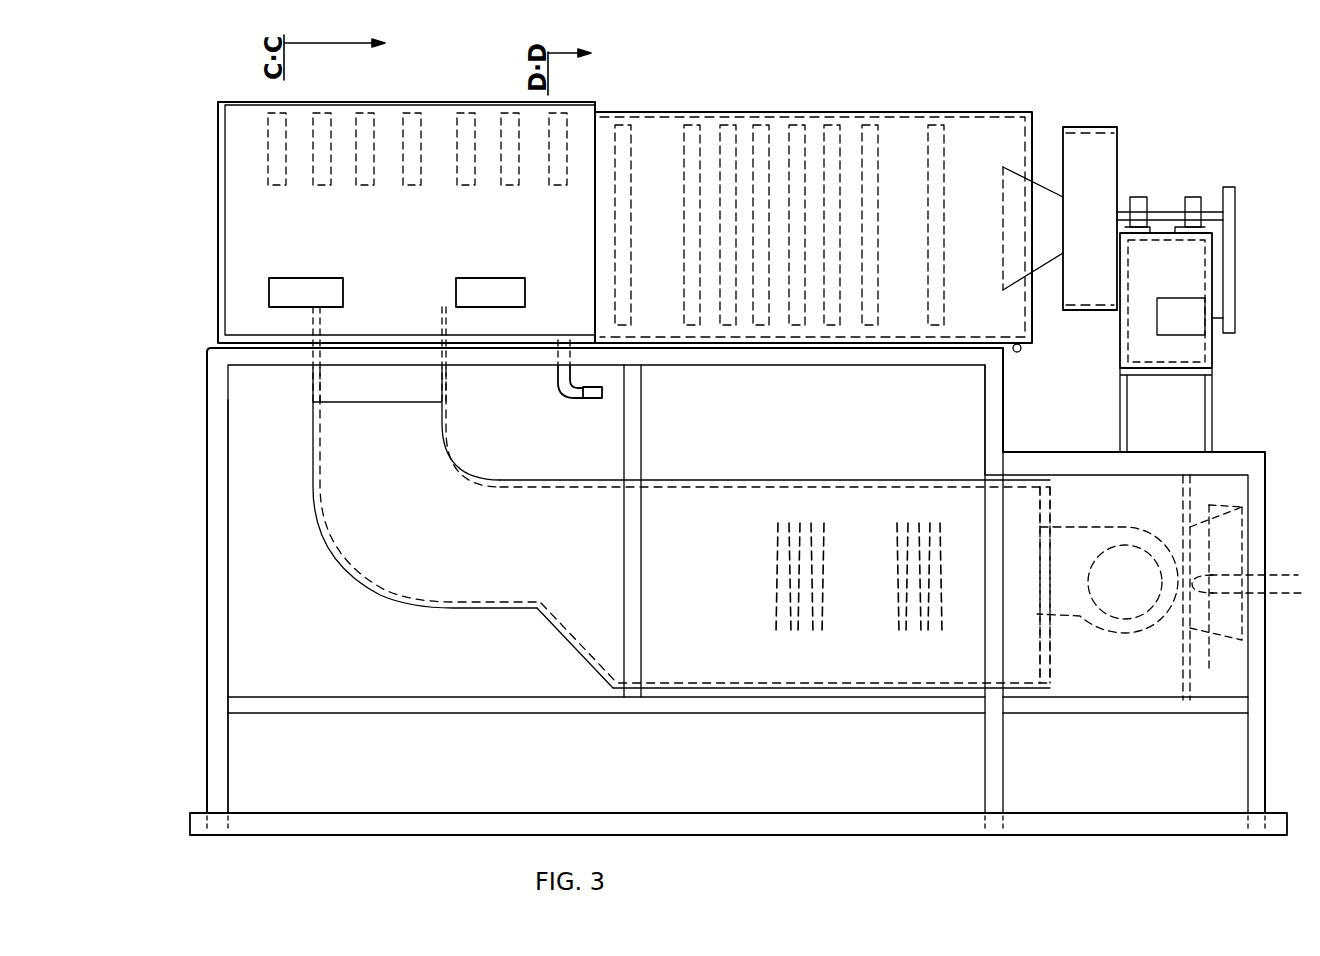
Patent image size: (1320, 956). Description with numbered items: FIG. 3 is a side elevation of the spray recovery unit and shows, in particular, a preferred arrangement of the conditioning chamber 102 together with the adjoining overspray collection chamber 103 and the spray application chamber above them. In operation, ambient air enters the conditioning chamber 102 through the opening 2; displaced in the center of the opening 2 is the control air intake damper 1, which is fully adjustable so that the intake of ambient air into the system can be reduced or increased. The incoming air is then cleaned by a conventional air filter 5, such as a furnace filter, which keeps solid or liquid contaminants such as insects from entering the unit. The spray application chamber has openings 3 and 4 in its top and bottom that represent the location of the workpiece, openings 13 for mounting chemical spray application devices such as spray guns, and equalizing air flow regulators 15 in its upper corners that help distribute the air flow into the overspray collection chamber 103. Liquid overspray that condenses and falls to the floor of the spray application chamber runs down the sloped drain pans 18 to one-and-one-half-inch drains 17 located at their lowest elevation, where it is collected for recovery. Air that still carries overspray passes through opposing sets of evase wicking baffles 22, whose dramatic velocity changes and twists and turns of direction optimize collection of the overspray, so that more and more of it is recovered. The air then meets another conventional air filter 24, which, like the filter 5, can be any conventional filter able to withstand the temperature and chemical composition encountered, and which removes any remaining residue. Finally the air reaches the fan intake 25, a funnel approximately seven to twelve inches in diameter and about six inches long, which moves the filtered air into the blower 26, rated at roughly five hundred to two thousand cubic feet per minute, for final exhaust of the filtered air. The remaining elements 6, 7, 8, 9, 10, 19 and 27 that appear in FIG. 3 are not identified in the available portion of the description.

The control air intake damper 1 is at (1236, 642).
The opening 2 is at (1199, 518).
The opening 3 is at (243, 97).
The opening 4 is at (280, 372).
The filter 5 is at (1200, 690).
The blower fan 6 is at (1112, 640).
The base plate 7 is at (1280, 812).
The lower chamber 8 is at (738, 725).
The brushes 9 is at (895, 636).
The return duct 10 is at (388, 603).
The openings 13 is at (445, 274).
The equalizing air flow regulators 15 is at (417, 122).
The drains 17 is at (1022, 350).
The sloped drain pans 18 is at (540, 385).
The drying chamber 19 is at (620, 108).
The wicking baffles 22 is at (868, 108).
The air filter 24 is at (940, 112).
The fan intake 25 is at (1047, 177).
The blower 26 is at (1120, 167).
The frame post 27 is at (195, 546).
The conditioning chamber 102 is at (713, 655).
The overspray collection chamber 103 is at (705, 110).